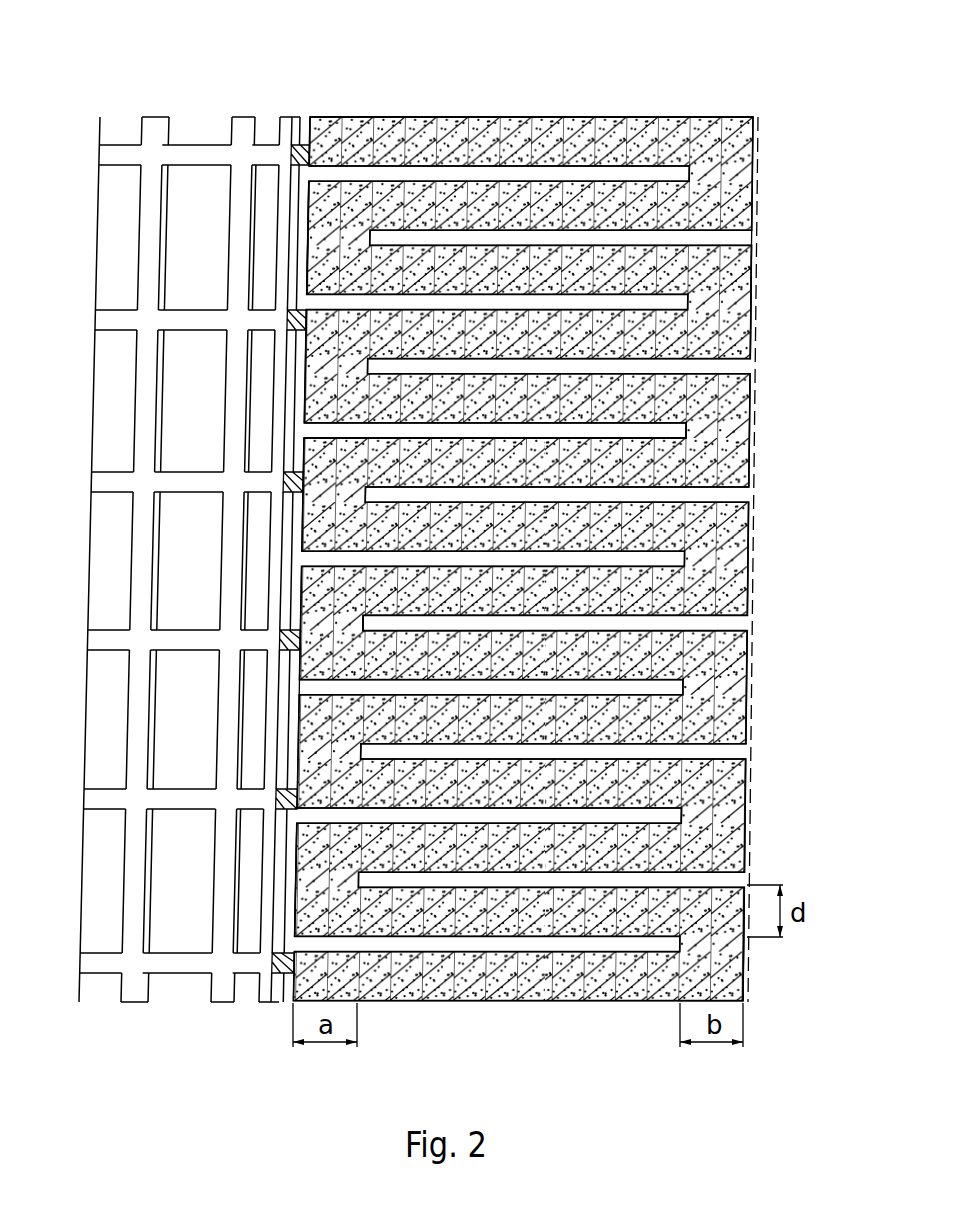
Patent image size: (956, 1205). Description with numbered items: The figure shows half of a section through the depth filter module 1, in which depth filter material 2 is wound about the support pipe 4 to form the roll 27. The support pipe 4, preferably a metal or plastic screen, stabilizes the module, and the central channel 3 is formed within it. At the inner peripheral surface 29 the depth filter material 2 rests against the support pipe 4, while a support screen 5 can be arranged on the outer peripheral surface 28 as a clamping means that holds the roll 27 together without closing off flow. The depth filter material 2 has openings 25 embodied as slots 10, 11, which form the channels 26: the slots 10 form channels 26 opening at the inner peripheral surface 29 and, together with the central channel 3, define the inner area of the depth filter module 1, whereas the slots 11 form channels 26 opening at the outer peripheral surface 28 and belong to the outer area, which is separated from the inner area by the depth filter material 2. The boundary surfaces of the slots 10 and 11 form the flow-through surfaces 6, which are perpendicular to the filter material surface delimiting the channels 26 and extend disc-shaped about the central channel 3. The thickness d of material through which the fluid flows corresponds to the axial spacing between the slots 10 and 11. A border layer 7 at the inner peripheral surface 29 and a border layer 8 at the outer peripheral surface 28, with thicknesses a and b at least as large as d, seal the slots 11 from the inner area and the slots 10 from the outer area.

The depth filter module 1 is at (638, 80).
The depth filter material 2 is at (546, 1002).
The central channel 3 is at (290, 992).
The support pipe 4 is at (187, 968).
The support screen 5 is at (755, 393).
The flow-through surfaces 6 is at (640, 626).
The border layer 7 is at (312, 215).
The border layer 8 is at (735, 299).
The slots 10 is at (573, 433).
The slots 11 is at (677, 622).
The openings 25 is at (682, 174).
The channels 26 is at (677, 821).
The roll 27 is at (444, 106).
The outer peripheral surface 28 is at (747, 978).
The inner peripheral surface 29 is at (293, 910).